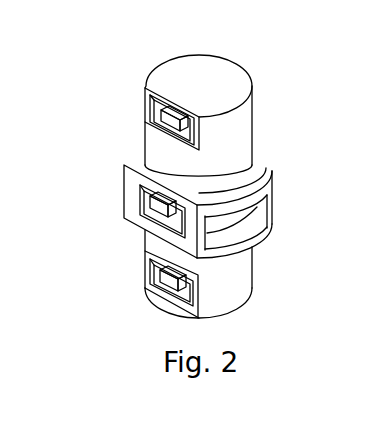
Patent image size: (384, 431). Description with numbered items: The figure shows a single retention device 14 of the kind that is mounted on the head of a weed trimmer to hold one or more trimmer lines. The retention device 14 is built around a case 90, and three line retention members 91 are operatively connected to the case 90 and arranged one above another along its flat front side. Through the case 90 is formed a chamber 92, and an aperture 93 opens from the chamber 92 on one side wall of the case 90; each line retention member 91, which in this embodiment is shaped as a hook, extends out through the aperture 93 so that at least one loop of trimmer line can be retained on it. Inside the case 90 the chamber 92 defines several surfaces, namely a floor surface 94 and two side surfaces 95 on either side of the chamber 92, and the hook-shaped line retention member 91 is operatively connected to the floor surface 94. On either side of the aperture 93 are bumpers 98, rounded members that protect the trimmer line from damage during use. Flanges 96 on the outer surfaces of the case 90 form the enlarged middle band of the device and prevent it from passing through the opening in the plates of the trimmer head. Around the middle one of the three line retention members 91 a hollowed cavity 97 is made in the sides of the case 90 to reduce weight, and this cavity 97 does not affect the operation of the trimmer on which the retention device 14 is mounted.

The retention device 14 is at (254, 81).
The case 90 is at (207, 72).
The line retention member 91 is at (176, 142).
The chamber 92 is at (188, 154).
The aperture 93 is at (150, 114).
The floor surface 94 is at (173, 139).
The side surface 95 is at (166, 113).
The flange 96 is at (262, 166).
The hollowed cavity 97 is at (245, 218).
The bumper 98 is at (158, 121).